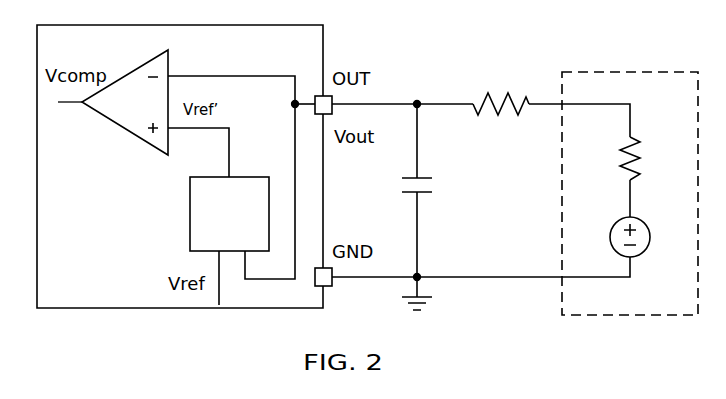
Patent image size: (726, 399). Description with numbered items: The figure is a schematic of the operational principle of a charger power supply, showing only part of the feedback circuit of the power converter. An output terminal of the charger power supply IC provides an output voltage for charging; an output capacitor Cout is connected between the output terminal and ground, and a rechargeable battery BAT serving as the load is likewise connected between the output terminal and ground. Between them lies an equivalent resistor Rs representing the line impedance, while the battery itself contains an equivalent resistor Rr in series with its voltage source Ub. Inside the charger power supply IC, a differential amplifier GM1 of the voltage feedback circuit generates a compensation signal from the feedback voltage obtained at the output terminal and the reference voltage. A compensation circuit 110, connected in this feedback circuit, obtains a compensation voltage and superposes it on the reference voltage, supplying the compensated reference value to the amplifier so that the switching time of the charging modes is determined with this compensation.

The compensation circuit 110 is at (246, 223).
The charger power supply IC is at (180, 166).
The differential amplifier GM1 is at (113, 102).
The equivalent resistor of the line impedance Rs is at (501, 84).
The output capacitor Cout is at (443, 189).
The rechargeable battery BAT is at (630, 193).
The equivalent resistor of the rechargeable battery Rr is at (647, 158).
The battery voltage source Ub is at (644, 237).